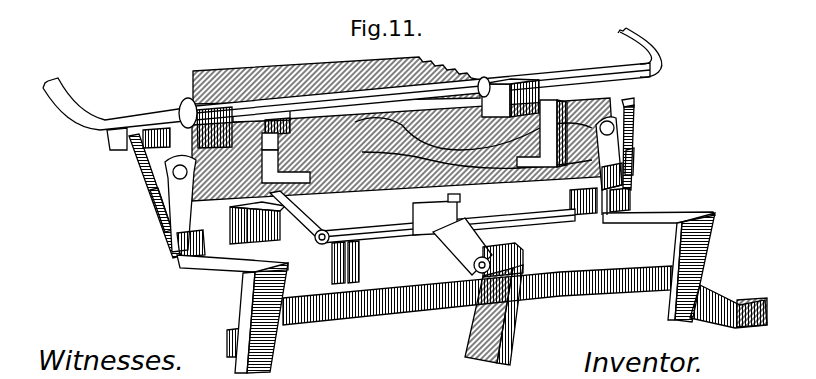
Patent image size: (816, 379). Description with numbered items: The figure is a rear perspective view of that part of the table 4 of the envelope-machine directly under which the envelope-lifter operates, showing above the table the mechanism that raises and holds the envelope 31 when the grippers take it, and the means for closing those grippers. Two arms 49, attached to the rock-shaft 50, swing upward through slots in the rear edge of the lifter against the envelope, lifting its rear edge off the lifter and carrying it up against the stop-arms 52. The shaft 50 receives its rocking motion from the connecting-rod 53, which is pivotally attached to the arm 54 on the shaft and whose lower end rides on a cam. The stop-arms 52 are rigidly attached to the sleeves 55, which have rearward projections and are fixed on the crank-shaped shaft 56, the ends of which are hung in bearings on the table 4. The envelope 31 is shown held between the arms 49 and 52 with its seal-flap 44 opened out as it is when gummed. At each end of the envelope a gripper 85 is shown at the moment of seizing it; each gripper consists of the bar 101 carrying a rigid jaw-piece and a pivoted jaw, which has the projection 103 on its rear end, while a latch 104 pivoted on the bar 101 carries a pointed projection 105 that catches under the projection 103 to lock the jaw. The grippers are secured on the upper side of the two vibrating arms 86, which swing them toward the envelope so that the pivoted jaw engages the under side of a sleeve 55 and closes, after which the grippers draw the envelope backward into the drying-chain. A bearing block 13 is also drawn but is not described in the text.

The table 4 is at (150, 207).
The bearing block 13 is at (236, 215).
The envelope 31 is at (222, 72).
The seal-flap 44 is at (403, 133).
The arms 49 is at (360, 213).
The rock-shaft 50 is at (417, 214).
The stop-arms 52 is at (519, 167).
The connecting-rod 53 is at (502, 317).
The arm 54 is at (470, 258).
The sleeves 55 is at (178, 102).
The crank-shaped shaft 56 is at (640, 41).
The grippers 85 is at (167, 218).
The vibrating arms 86 is at (501, 293).
The bar 101 is at (167, 243).
The projection 103 is at (160, 171).
The latch 104 is at (160, 230).
The pointed projection 105 is at (138, 184).